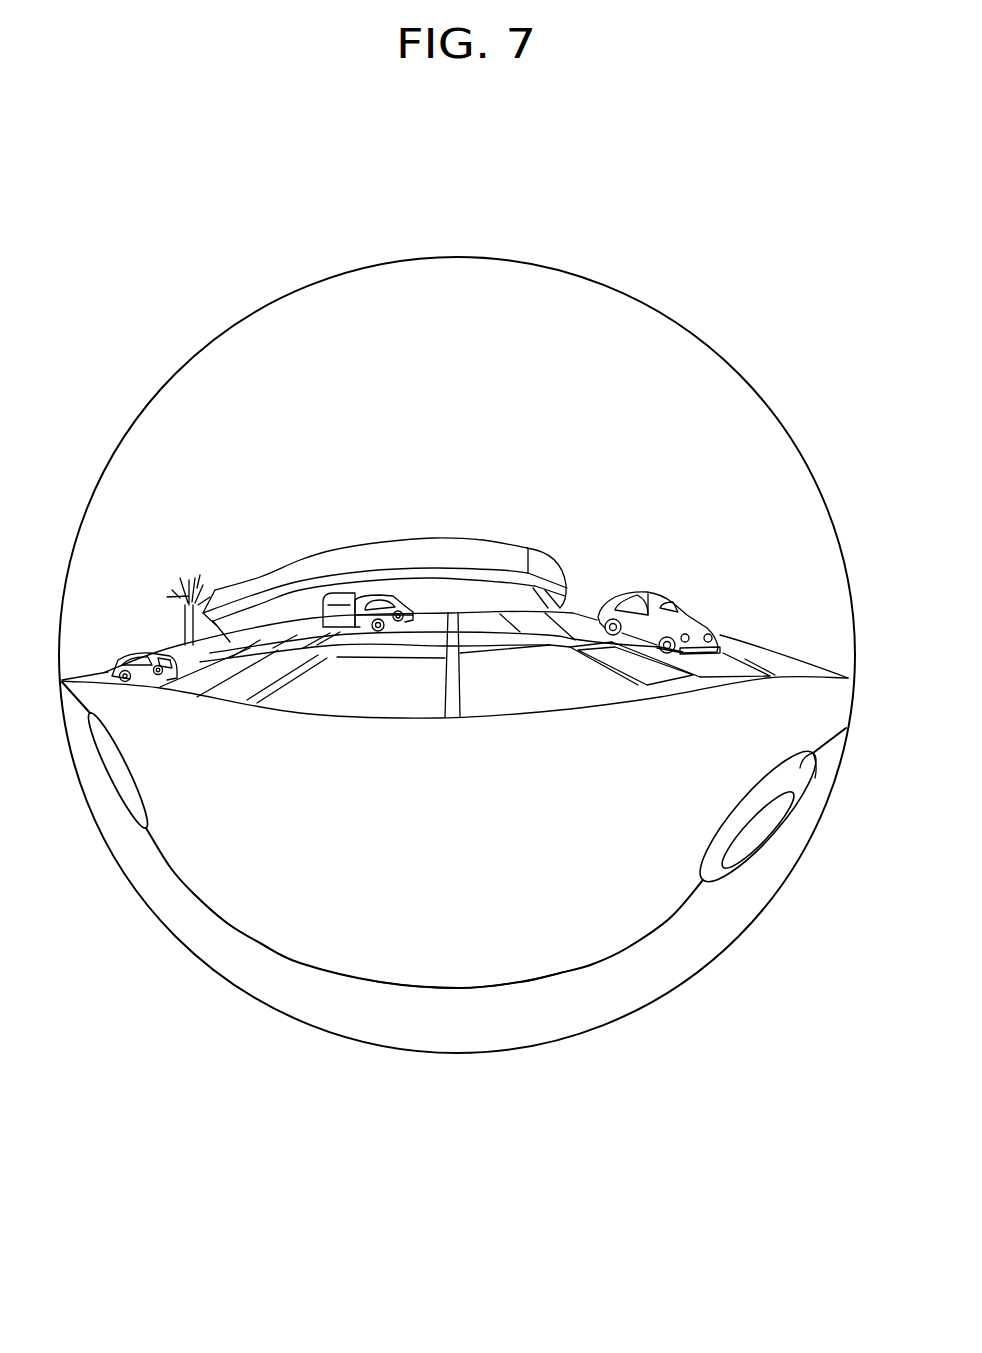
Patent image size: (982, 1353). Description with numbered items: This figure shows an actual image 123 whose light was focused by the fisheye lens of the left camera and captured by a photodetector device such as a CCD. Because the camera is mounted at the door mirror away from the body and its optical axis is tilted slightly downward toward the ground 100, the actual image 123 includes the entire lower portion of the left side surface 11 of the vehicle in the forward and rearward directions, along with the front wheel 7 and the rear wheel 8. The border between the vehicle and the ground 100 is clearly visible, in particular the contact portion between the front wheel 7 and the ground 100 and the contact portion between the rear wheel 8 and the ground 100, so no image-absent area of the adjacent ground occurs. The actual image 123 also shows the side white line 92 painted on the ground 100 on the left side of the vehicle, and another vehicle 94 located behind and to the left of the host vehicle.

The actual image 123 is at (667, 288).
The left side surface 11 is at (433, 1020).
The ground 100 is at (523, 942).
The rear wheel 8 is at (143, 803).
The front wheel 7 is at (757, 830).
The side white line 92 is at (395, 718).
The vehicle 94 is at (130, 652).